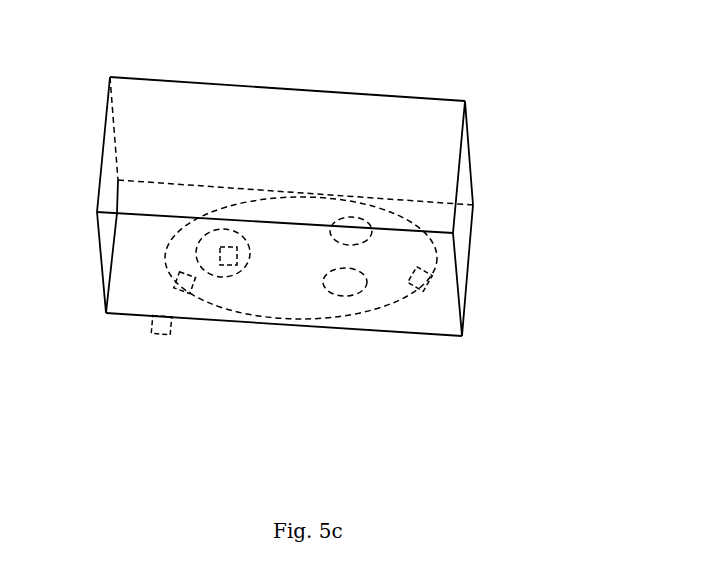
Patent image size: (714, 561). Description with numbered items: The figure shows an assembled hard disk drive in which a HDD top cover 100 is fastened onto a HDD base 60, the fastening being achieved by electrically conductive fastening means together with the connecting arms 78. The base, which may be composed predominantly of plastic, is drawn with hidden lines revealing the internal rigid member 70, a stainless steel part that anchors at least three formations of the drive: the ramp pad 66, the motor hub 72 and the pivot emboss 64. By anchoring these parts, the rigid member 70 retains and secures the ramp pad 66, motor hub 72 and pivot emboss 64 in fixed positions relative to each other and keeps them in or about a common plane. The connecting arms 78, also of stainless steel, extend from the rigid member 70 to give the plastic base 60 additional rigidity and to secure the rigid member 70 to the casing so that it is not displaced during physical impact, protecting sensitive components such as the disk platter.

The HDD top cover 100 is at (408, 107).
The HDD base 60 is at (447, 317).
The rigid member 70 is at (287, 297).
The motor hub 72 is at (204, 252).
The connecting arms 78 is at (173, 273).
The ramp pad 66 is at (365, 220).
The pivot emboss 64 is at (352, 287).